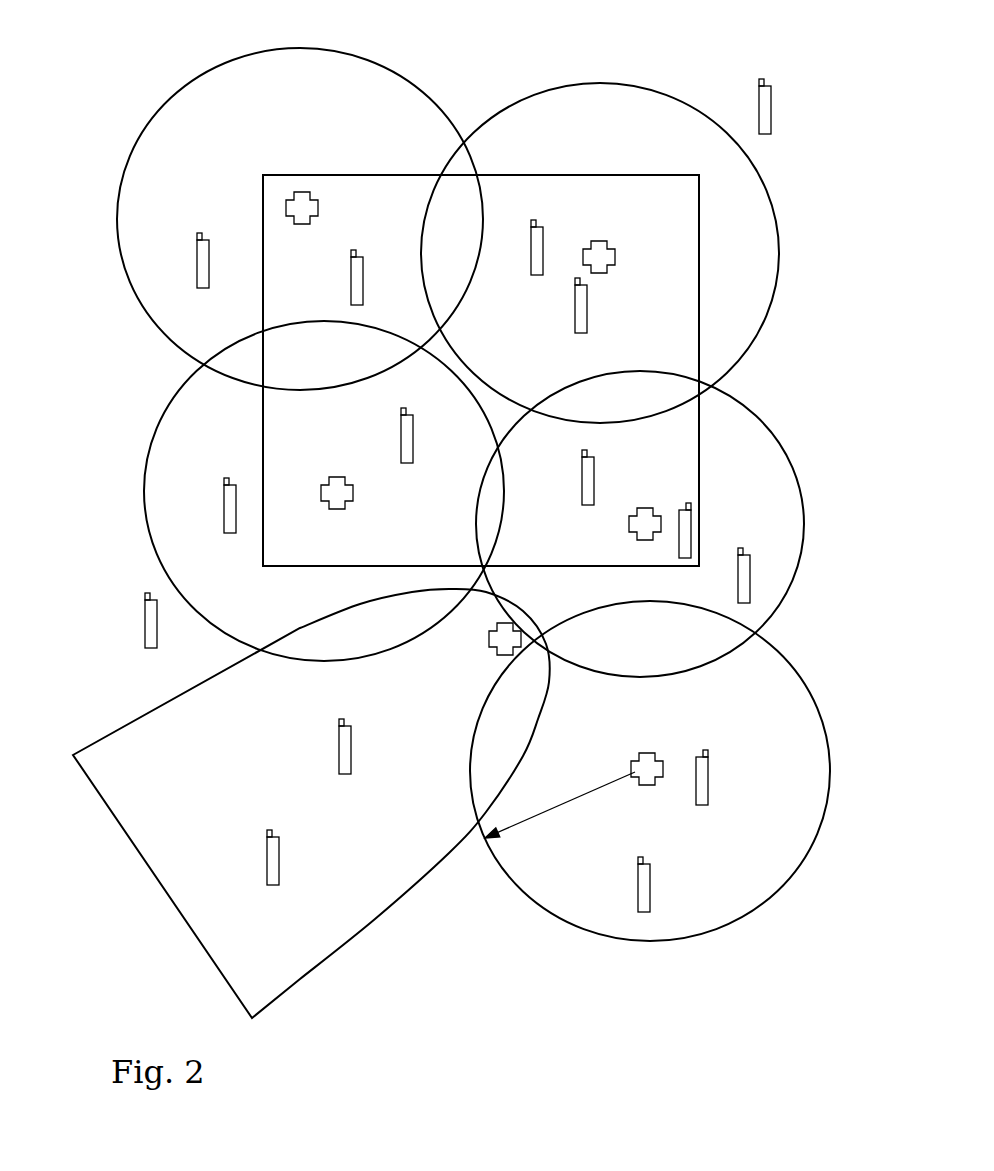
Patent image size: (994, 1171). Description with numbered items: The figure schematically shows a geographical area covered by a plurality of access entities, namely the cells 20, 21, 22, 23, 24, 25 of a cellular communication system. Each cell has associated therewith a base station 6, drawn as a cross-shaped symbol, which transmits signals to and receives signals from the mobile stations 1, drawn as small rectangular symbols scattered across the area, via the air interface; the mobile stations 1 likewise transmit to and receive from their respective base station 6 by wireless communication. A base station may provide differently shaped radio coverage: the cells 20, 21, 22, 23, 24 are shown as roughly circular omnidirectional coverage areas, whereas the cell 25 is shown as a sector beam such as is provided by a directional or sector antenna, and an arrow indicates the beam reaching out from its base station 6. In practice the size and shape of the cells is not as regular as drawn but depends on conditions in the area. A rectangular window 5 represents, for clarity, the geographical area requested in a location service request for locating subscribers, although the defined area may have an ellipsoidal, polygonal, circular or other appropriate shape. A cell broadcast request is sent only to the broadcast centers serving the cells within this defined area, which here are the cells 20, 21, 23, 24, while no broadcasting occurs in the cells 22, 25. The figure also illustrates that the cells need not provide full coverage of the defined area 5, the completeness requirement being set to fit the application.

The mobile station 1 is at (203, 263).
The rectangular window 5 is at (700, 428).
The base station 6 is at (600, 257).
The cell 20 is at (735, 197).
The cell 21 is at (777, 493).
The cell 22 is at (775, 742).
The cell 23 is at (157, 190).
The cell 24 is at (183, 440).
The cell 25 is at (148, 752).